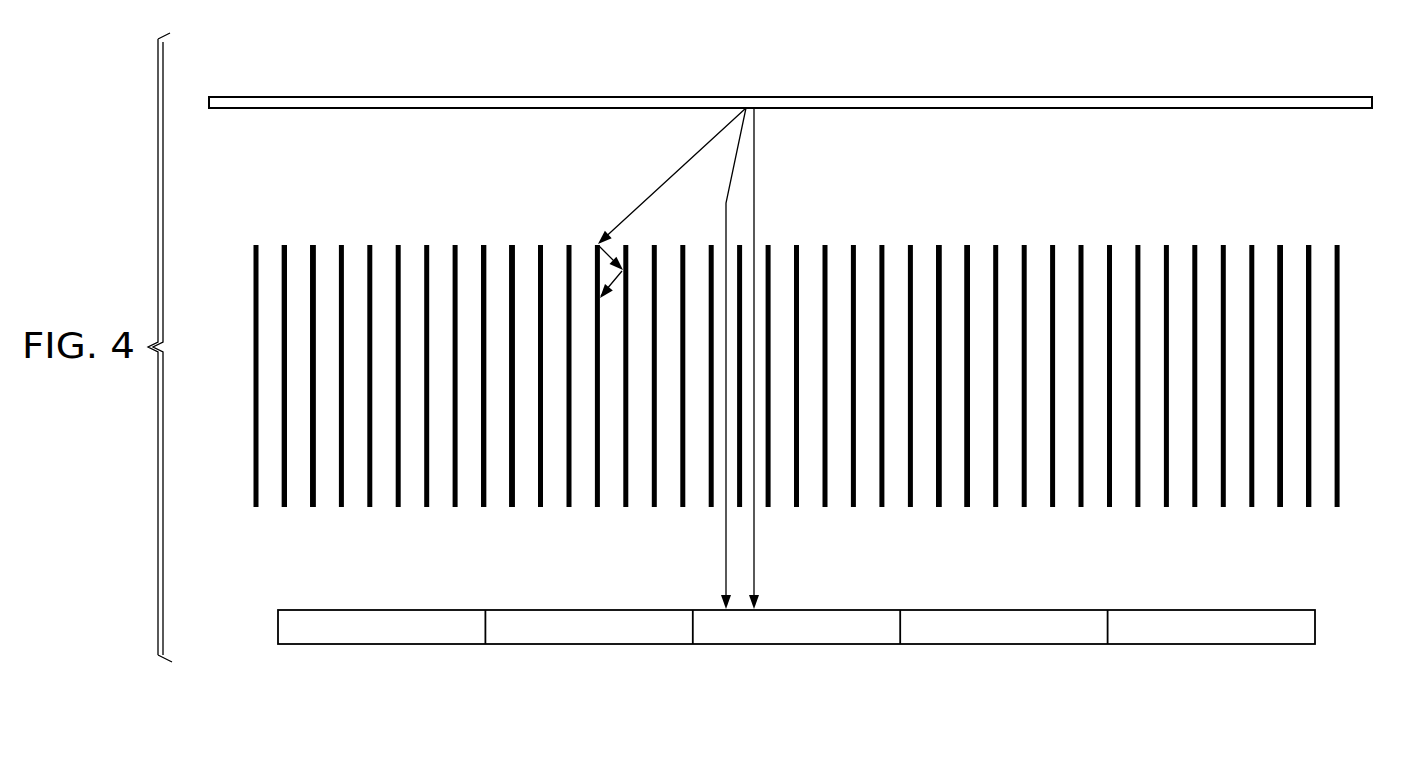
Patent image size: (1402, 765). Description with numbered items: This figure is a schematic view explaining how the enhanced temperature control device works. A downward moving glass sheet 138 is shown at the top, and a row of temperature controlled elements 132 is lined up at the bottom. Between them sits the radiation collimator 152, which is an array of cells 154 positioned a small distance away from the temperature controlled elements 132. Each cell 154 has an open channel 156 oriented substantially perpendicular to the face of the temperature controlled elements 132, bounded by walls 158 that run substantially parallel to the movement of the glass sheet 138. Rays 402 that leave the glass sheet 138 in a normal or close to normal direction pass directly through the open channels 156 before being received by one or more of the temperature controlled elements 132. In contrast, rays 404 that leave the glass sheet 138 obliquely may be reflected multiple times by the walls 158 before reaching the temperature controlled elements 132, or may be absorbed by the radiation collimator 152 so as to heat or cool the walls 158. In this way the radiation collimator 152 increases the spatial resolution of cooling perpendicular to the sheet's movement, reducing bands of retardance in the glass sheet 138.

The temperature controlled elements 132 is at (381, 645).
The glass sheet 138 is at (790, 96).
The radiation collimator 152 is at (234, 242).
The cells 154 is at (317, 236).
The open channels 156 is at (298, 516).
The walls 158 is at (282, 257).
The rays 402 is at (725, 545).
The rays 404 is at (670, 177).